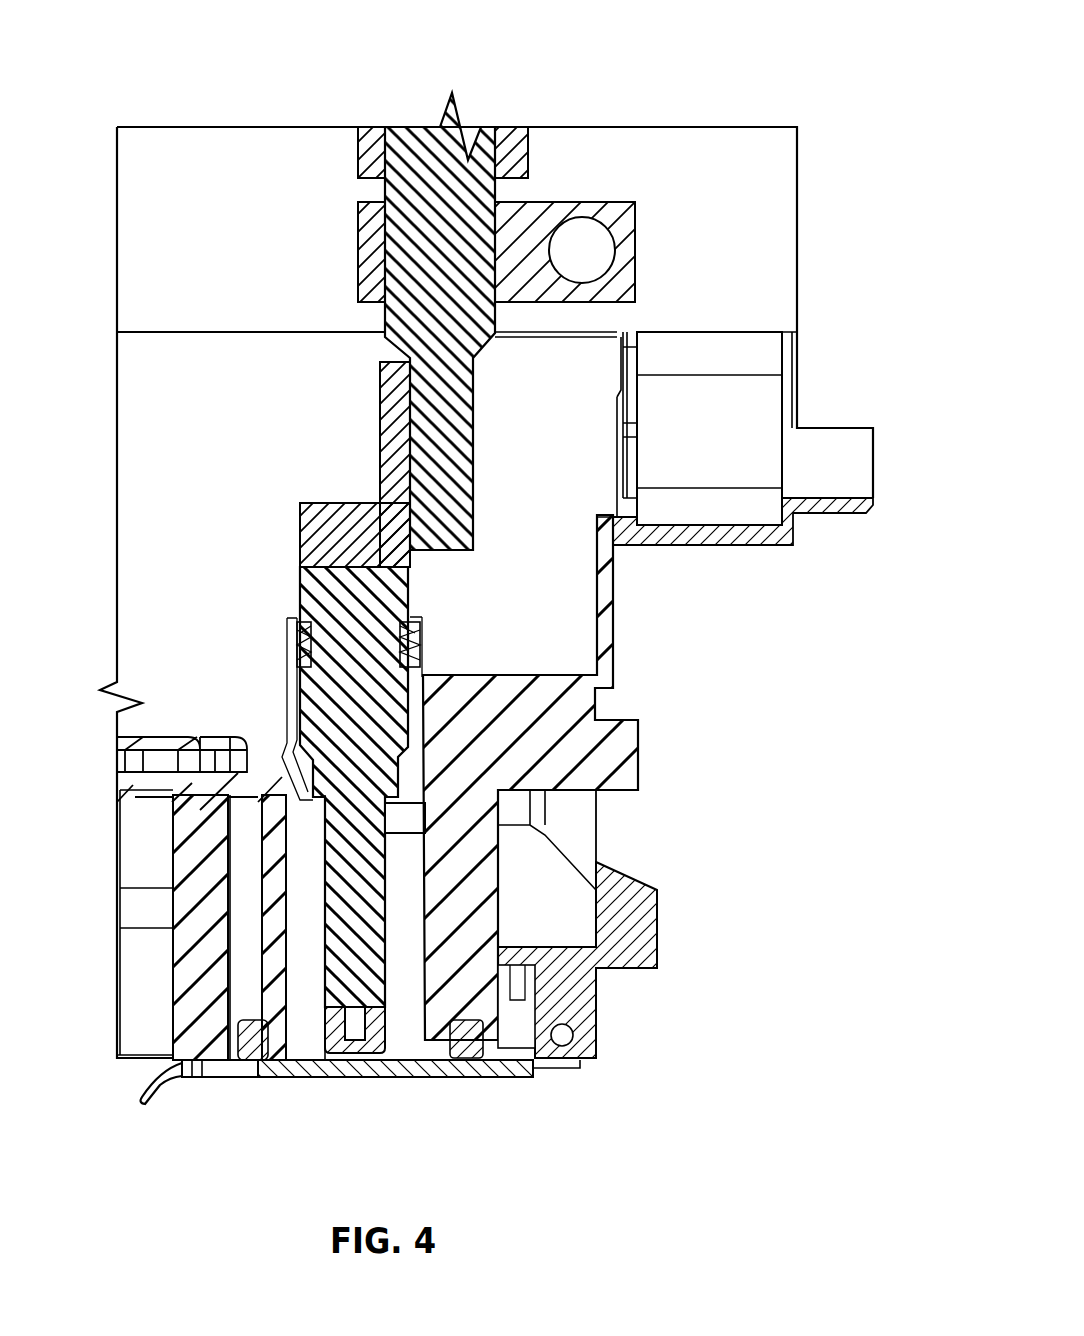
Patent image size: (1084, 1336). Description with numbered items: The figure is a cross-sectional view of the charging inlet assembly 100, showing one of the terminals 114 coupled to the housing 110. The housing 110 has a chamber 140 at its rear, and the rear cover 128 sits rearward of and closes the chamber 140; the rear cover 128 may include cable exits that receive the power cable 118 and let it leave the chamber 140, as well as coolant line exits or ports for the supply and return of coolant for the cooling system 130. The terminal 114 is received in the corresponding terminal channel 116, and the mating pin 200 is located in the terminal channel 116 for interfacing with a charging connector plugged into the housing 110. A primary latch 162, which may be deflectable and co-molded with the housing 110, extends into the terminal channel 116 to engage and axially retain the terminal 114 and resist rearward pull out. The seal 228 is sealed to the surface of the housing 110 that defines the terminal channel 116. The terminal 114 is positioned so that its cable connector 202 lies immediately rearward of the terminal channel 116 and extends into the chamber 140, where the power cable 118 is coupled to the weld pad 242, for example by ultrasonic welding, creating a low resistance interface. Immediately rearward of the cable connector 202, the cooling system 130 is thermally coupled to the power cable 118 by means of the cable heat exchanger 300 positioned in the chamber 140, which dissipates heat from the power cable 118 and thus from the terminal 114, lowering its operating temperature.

The charging inlet assembly 100 is at (459, 534).
The housing 110 is at (583, 1007).
The terminal 114 is at (330, 983).
The terminal channel 116 is at (402, 1013).
The power cable 118 is at (428, 165).
The rear cover 128 is at (775, 250).
The cooling system 130 is at (545, 185).
The chamber 140 is at (150, 575).
The primary latch 162 is at (300, 800).
The mating pin 200 is at (360, 835).
The cable connector 202 is at (336, 499).
The seal 228 is at (420, 640).
The weld pad 242 is at (380, 440).
The cable heat exchanger 300 is at (615, 198).